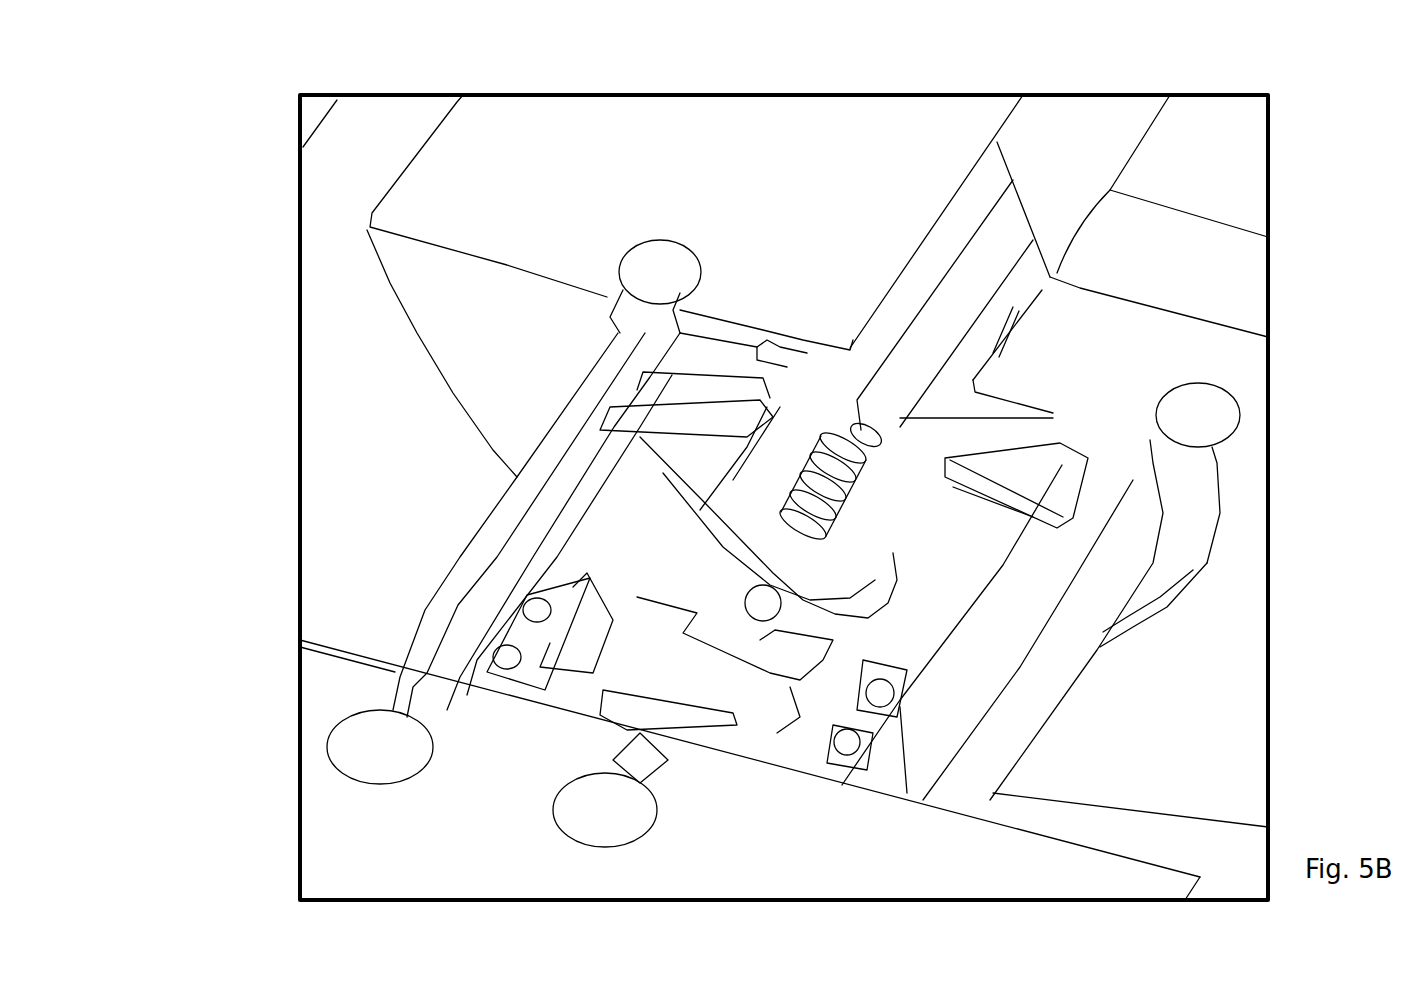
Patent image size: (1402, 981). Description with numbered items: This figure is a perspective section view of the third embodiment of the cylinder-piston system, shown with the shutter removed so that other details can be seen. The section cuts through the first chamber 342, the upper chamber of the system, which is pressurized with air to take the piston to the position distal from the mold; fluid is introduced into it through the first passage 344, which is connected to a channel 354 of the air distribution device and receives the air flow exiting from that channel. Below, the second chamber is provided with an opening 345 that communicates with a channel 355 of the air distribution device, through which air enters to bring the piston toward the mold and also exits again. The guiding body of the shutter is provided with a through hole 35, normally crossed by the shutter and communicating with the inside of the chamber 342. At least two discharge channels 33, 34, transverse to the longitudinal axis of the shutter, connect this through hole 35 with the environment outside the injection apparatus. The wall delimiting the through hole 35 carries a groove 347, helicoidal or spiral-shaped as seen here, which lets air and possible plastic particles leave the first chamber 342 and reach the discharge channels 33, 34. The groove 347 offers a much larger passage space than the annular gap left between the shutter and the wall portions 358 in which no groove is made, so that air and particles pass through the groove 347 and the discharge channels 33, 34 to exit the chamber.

The discharge channel 33 is at (785, 375).
The discharge channel 34 is at (915, 425).
The through hole 35 is at (943, 325).
The first chamber 342 is at (628, 560).
The first passage 344 is at (428, 670).
The opening 345 is at (660, 738).
The groove 347 is at (835, 445).
The channel 354 is at (355, 730).
The channel 355 is at (605, 790).
The wall portions 358 is at (872, 440).